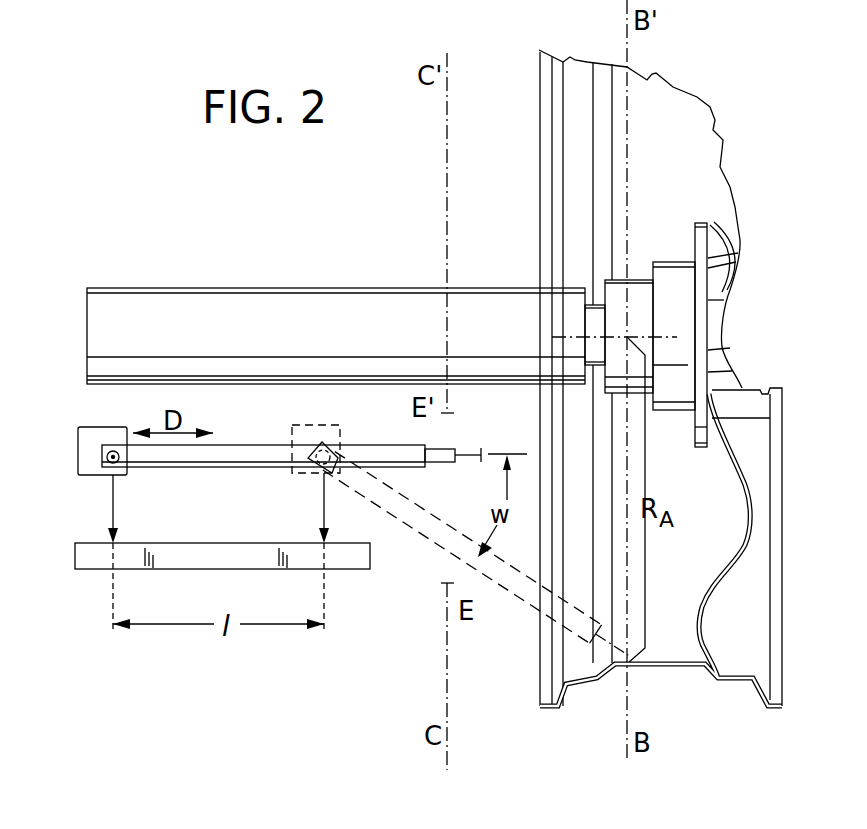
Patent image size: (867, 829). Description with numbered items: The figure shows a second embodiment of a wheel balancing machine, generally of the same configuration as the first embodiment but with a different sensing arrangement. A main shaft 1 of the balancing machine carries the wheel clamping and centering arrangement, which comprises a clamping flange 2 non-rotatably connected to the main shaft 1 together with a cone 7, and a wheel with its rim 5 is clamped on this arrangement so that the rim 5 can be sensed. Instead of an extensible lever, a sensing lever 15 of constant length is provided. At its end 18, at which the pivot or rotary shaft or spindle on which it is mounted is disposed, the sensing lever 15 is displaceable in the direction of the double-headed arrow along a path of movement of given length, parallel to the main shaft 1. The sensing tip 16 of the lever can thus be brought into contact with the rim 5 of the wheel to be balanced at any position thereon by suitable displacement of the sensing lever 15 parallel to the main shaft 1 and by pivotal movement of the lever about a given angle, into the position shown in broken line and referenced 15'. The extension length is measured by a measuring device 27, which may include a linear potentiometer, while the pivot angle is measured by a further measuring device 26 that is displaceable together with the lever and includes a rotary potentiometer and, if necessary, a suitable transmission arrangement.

The main shaft 1 is at (301, 324).
The clamping flange 2 is at (705, 216).
The wheel rim 5 is at (750, 507).
The cone 7 is at (719, 323).
The sensing lever 15 is at (263, 431).
The sensing lever in pivoted position 15' is at (478, 558).
The sensing tip 16 is at (484, 451).
The lever end 18 is at (104, 456).
The measuring device 26 is at (90, 439).
The measuring device 27 is at (216, 557).